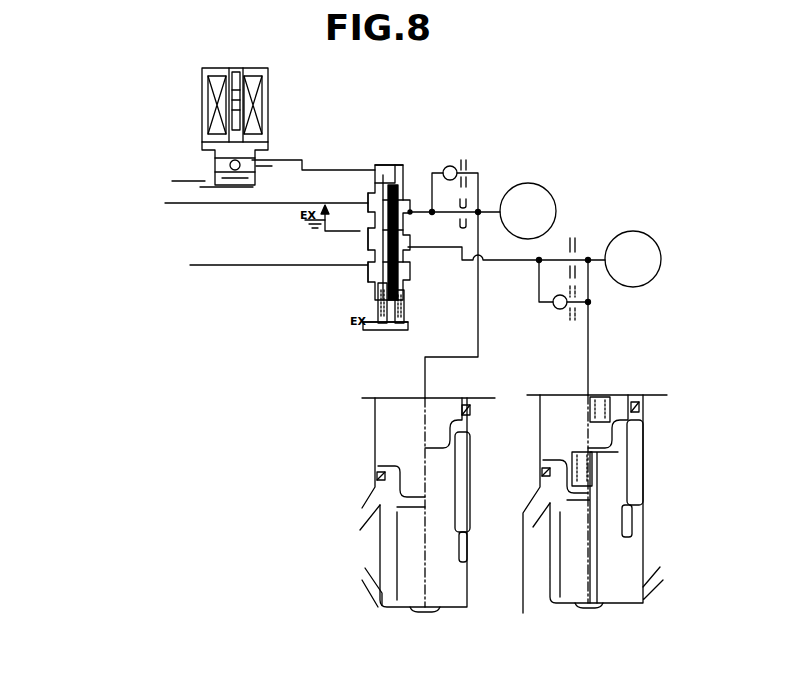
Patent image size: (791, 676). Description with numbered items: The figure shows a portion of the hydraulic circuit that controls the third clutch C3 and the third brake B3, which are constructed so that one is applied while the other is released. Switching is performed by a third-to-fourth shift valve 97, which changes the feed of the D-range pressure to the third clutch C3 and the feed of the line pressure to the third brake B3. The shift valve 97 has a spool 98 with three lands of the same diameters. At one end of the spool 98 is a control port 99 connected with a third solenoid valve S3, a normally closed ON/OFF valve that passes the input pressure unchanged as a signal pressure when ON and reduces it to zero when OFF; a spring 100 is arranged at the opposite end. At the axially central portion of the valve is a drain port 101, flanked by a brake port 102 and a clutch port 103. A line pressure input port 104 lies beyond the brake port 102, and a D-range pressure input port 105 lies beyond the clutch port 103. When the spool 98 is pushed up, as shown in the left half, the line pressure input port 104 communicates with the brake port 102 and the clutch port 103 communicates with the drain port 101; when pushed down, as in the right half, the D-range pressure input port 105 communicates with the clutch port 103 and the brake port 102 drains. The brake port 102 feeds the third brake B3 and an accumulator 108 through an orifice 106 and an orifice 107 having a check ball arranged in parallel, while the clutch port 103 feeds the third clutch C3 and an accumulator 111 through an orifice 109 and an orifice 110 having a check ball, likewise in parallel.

The 3–4 shift valve 97 is at (420, 129).
The spool 98 is at (397, 280).
The control port 99 is at (372, 165).
The spring 100 is at (378, 330).
The drain port 101 is at (368, 242).
The brake port 102 is at (412, 208).
The clutch port 103 is at (404, 248).
The line pressure input port 104 is at (368, 192).
The D-range pressure input port 105 is at (368, 272).
The orifice 106 is at (460, 222).
The orifice having a check ball 107 is at (480, 165).
The accumulator 108 is at (375, 455).
The orifice 109 is at (577, 255).
The orifice having a check ball 110 is at (565, 312).
The accumulator 111 is at (645, 462).
The third solenoid valve S3 is at (203, 118).
The third brake B3 is at (528, 211).
The third clutch C3 is at (633, 259).